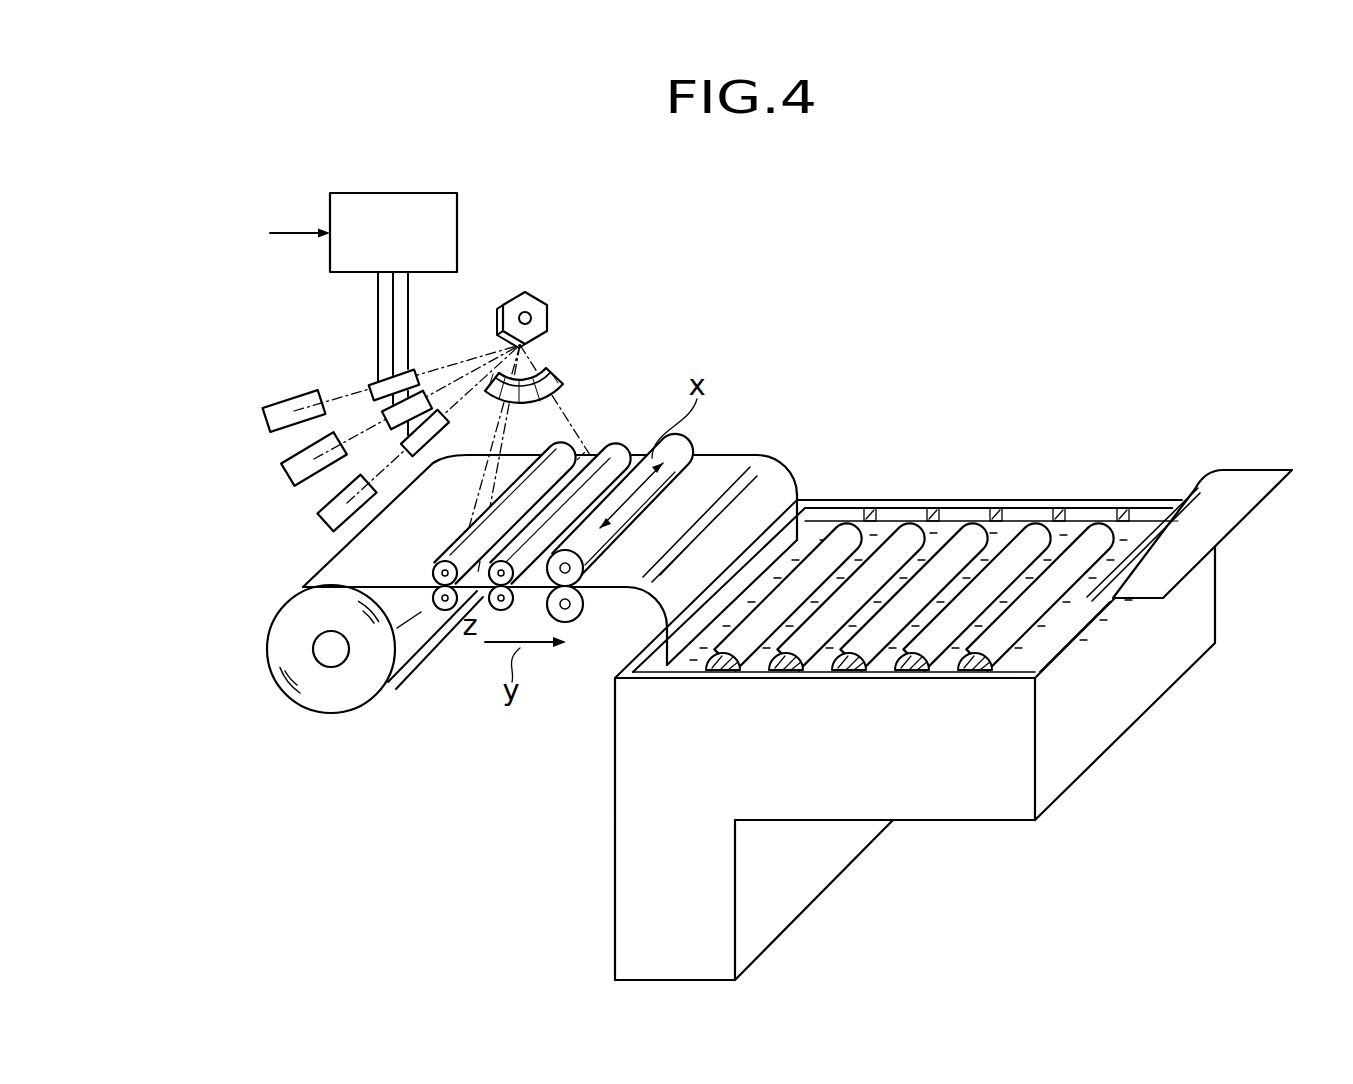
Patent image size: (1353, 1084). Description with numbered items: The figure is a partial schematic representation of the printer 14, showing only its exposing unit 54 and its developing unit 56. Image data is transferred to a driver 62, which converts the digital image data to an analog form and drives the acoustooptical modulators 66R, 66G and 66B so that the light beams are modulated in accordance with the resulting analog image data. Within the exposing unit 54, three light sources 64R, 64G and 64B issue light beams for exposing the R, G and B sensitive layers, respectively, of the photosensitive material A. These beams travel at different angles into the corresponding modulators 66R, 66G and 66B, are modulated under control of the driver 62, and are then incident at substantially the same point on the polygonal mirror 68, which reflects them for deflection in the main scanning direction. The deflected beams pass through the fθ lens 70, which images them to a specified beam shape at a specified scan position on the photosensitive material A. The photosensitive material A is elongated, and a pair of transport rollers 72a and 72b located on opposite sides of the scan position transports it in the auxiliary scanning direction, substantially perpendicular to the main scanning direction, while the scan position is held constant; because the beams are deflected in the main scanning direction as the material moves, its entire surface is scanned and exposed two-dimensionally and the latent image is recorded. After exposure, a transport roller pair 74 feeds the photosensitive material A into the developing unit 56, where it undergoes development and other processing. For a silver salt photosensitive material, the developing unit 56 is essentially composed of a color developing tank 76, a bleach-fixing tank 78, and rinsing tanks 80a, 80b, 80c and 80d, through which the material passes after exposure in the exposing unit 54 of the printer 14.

The printer 14 is at (962, 328).
The exposing unit 54 is at (713, 332).
The developing unit 56 is at (1106, 446).
The driver 62 is at (410, 249).
The light source 64R is at (278, 410).
The light source 64G is at (290, 470).
The light source 64B is at (330, 518).
The acoustooptical modulator 66R is at (368, 385).
The acoustooptical modulator 66G is at (388, 420).
The acoustooptical modulator 66B is at (437, 406).
The polygonal mirror 68 is at (541, 313).
The fθ lens 70 is at (550, 367).
The transport roller 72a is at (428, 648).
The transport roller 72b is at (616, 442).
The transport roller pair 74 is at (576, 628).
The color developing tank 76 is at (813, 526).
The bleach-fixing tank 78 is at (748, 672).
The rinsing tank 80a is at (950, 526).
The rinsing tank 80b is at (883, 665).
The rinsing tank 80c is at (938, 672).
The rinsing tank 80d is at (1013, 664).
The photosensitive material A is at (729, 468).